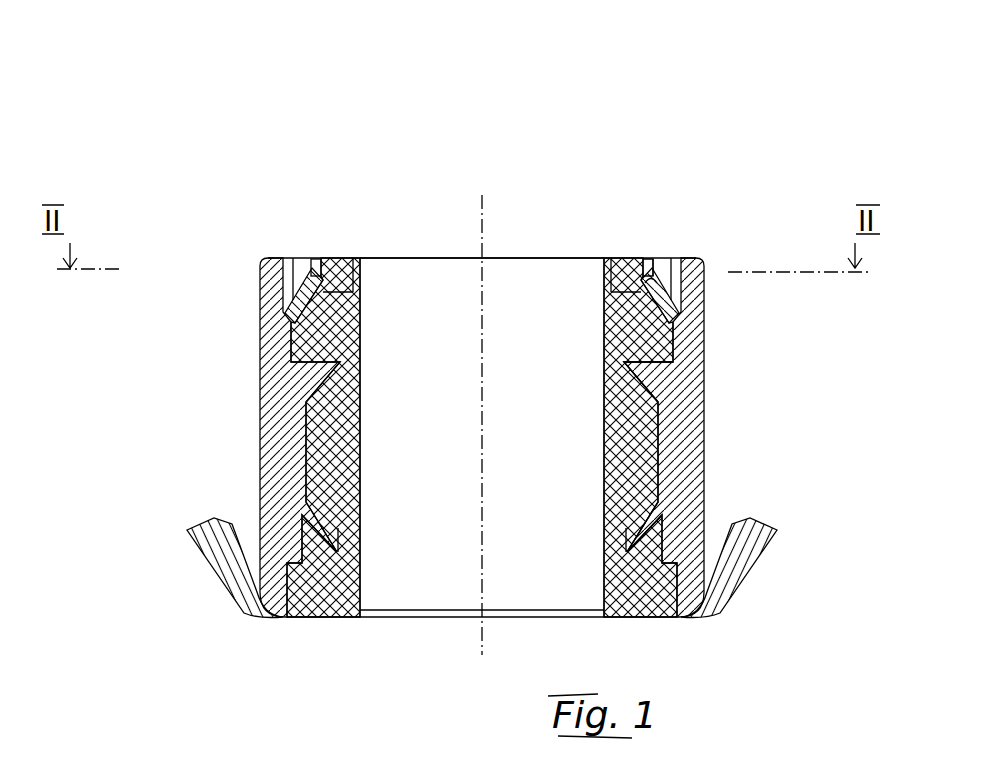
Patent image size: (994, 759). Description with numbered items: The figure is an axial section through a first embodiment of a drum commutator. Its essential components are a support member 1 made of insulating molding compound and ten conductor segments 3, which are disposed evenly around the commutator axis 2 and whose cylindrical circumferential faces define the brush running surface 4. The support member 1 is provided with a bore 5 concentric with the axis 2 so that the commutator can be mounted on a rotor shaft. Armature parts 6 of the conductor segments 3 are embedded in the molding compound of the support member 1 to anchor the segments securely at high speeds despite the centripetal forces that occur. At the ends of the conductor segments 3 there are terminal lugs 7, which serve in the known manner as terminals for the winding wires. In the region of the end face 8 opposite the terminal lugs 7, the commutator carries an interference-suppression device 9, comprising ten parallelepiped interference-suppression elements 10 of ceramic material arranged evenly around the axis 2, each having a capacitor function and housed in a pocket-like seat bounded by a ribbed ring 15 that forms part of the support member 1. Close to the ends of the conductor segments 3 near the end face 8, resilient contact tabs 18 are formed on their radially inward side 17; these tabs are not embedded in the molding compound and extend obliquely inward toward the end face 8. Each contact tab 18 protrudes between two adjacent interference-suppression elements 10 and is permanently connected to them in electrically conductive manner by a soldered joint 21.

The support member 1 is at (385, 257).
The commutator axis 2 is at (482, 645).
The conductor segments 3 is at (277, 396).
The brush running surface 4 is at (258, 418).
The bore 5 is at (420, 580).
The armature parts 6 is at (677, 357).
The terminal lugs 7 is at (768, 550).
The end face 8 is at (637, 186).
The interference-suppression device 9 is at (675, 250).
The interference-suppression elements 10 is at (650, 258).
The ribbed ring 15 is at (353, 257).
The radially inward side 17 is at (290, 340).
The resilient contact tabs 18 is at (292, 257).
The soldered joint 21 is at (318, 257).